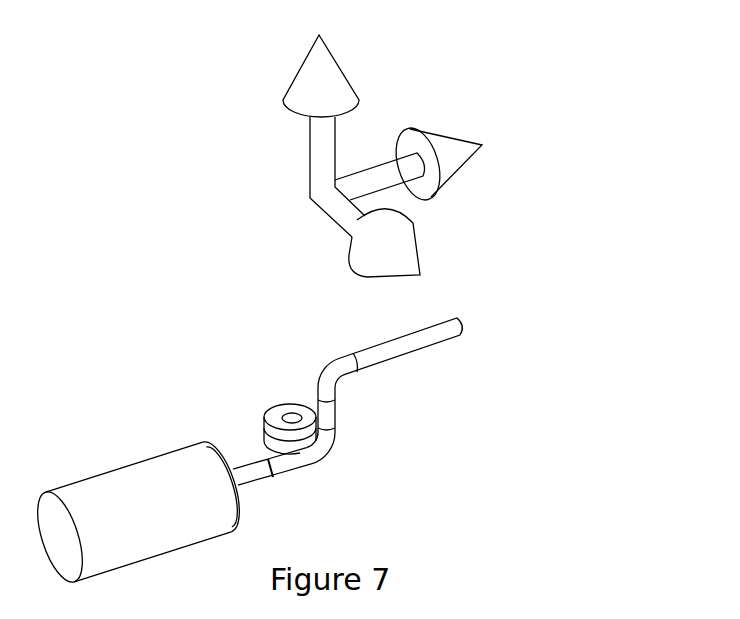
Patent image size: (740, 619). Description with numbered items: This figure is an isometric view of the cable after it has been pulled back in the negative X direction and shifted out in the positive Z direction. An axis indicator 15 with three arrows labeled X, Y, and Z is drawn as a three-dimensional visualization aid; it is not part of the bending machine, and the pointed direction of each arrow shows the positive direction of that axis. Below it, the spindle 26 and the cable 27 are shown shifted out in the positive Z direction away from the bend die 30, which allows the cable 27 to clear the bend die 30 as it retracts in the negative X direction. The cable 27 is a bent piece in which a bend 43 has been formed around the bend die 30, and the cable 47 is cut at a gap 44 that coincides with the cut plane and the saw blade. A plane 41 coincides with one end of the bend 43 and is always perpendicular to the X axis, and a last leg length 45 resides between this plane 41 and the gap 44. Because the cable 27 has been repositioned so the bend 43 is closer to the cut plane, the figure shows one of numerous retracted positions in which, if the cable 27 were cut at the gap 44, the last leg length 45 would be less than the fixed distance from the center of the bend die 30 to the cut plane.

The axis indicator 15 is at (322, 213).
The spindle 26 is at (138, 462).
The cable 27 is at (410, 353).
The bend die 30 is at (270, 405).
The plane 41 is at (305, 472).
The bend 43 is at (332, 442).
The gap 44 is at (272, 478).
The last leg length 45 is at (272, 473).
The cable 47 is at (250, 466).